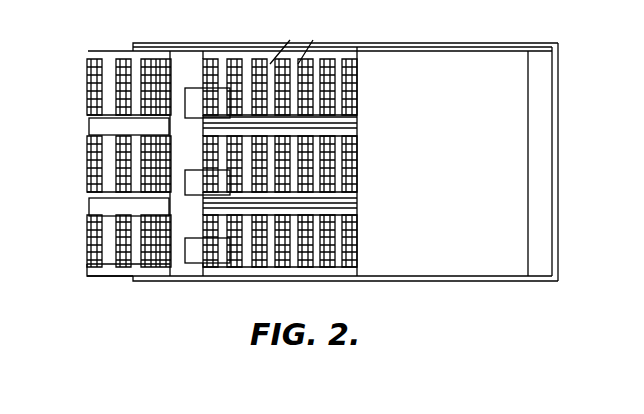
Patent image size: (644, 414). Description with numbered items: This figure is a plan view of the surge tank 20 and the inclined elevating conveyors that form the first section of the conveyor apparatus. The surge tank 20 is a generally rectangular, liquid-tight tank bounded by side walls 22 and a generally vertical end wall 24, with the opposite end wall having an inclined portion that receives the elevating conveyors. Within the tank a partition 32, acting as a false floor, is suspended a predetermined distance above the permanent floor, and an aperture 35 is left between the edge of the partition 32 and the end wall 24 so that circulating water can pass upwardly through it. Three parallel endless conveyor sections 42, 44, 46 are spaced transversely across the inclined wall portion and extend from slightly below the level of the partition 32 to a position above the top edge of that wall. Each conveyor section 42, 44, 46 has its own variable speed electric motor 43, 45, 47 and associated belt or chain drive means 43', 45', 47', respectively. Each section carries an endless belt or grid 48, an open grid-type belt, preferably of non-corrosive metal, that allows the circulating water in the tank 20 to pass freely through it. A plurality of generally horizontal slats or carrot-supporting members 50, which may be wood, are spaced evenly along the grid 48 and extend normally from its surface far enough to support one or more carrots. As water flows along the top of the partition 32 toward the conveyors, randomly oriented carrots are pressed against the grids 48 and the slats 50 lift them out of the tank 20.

The surge tank 20 is at (426, 42).
The side walls 22 is at (487, 44).
The end wall 24 is at (558, 97).
The partition 32 is at (486, 170).
The aperture 35 is at (553, 166).
The endless conveyor section 42 is at (87, 242).
The variable speed electric motor 43 is at (207, 250).
The belt or chain drive means 43' is at (110, 289).
The endless conveyor section 44 is at (87, 167).
The variable speed electric motor 45 is at (207, 182).
The belt or chain drive means 45' is at (100, 207).
The endless conveyor section 46 is at (87, 80).
The variable speed electric motor 47 is at (207, 103).
The belt or chain drive means 47' is at (100, 127).
The endless belt or grid 48 is at (360, 89).
The slats or carrot-supporting members 50 is at (270, 65).